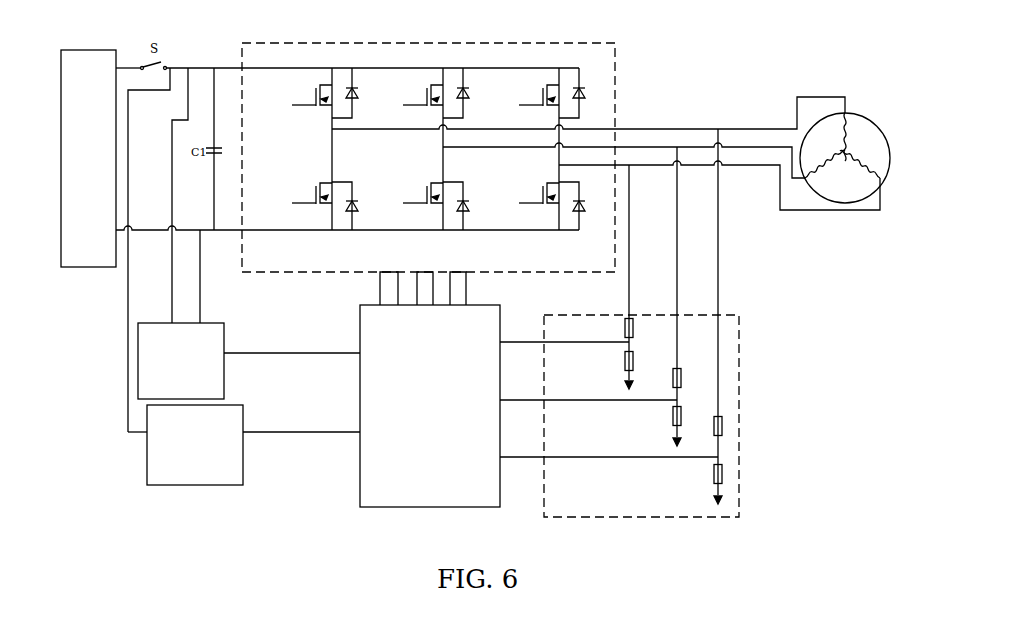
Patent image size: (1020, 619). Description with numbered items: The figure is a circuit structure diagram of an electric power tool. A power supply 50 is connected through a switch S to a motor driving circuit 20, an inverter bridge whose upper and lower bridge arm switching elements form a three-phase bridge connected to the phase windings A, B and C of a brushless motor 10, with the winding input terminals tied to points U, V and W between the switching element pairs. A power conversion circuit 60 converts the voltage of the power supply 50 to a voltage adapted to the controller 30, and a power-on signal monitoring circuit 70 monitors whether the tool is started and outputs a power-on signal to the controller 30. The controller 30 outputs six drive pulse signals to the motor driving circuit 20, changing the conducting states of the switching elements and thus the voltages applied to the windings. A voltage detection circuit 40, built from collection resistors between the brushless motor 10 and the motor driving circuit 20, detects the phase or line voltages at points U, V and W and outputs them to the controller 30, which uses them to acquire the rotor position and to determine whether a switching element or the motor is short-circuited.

The brushless motor 10 is at (890, 143).
The motor driving circuit 20 is at (455, 43).
The controller 30 is at (360, 477).
The voltage detection circuit 40 is at (739, 415).
The power supply 50 is at (61, 152).
The power conversion circuit 60 is at (224, 331).
The power-on signal monitoring circuit 70 is at (243, 411).